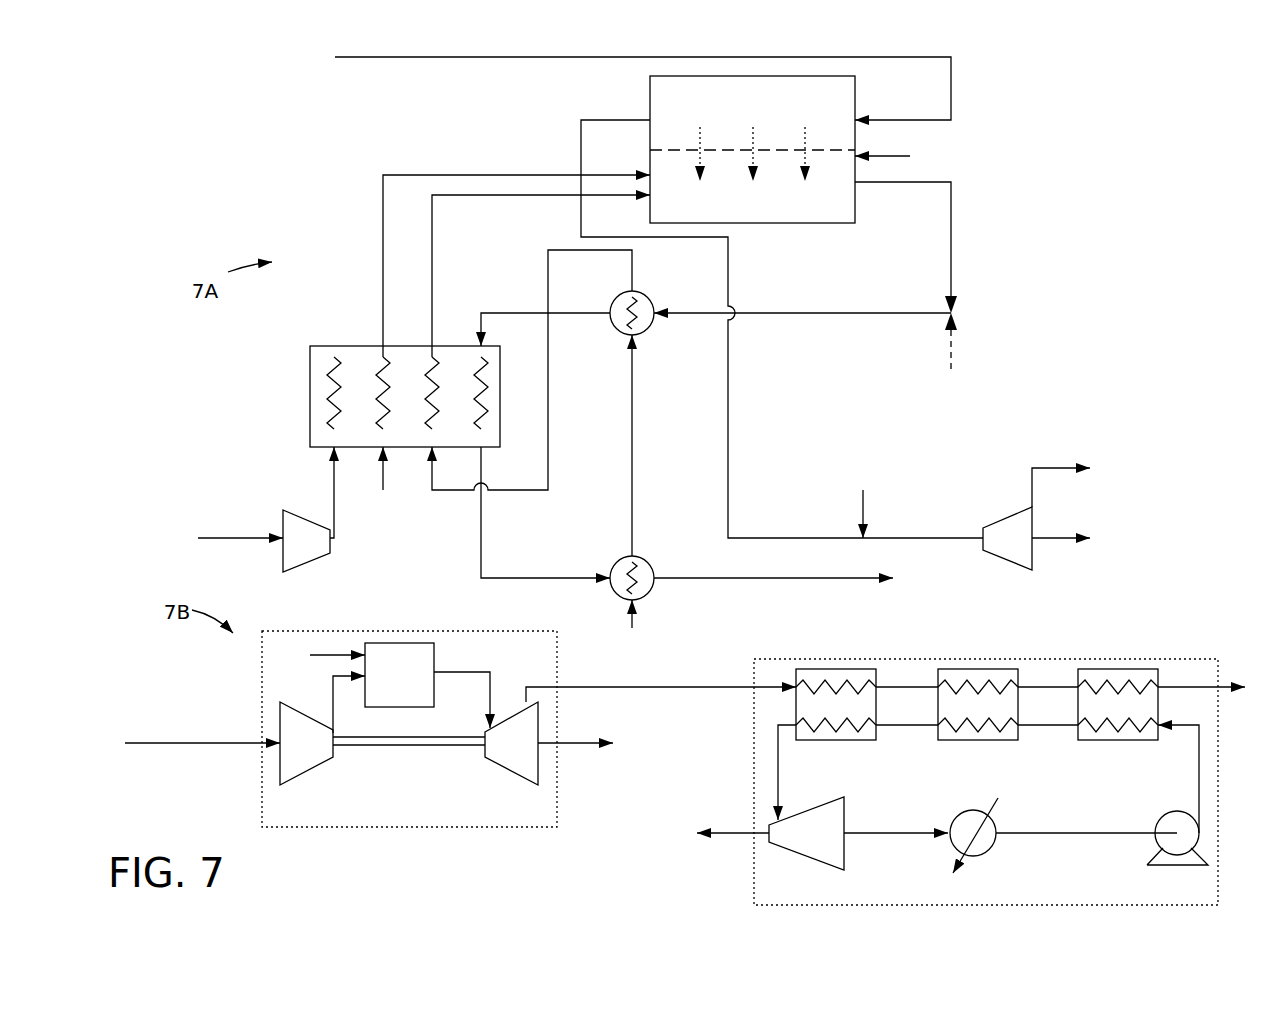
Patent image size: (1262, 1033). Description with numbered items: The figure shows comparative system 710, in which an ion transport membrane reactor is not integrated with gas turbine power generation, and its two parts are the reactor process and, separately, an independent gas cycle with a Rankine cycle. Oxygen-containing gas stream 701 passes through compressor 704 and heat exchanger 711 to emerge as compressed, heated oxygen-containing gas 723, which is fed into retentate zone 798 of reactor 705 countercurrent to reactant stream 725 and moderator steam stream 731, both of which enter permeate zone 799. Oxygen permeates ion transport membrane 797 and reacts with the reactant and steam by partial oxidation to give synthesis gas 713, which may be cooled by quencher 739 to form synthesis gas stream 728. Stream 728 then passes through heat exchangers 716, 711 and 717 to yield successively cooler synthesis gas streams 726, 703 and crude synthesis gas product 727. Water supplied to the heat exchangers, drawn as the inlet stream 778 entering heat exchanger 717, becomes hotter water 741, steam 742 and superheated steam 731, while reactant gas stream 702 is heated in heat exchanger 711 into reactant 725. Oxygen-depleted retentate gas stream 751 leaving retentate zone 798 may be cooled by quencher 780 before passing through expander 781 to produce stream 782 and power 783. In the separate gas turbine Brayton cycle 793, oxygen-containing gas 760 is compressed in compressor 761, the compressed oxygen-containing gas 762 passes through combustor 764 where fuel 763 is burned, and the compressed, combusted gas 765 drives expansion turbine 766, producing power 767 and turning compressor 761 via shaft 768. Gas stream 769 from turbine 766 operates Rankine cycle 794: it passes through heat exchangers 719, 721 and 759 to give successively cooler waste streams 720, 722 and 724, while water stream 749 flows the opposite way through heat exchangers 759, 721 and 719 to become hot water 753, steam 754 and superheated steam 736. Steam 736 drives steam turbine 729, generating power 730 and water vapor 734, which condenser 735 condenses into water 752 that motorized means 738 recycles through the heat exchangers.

In FIG. 7A, the oxygen-containing gas stream 701 is at (223, 538).
In FIG. 7A, the reactant gas stream 702 is at (384, 493).
In FIG. 7A, the synthesis gas stream 703 is at (482, 532).
In FIG. 7A, the compressor 704 is at (290, 552).
In FIG. 7A, the ion transport membrane reactor 705 is at (909, 156).
In FIG. 7A, the system 710 is at (1040, 262).
In FIG. 7A, the heat exchanger 711 is at (310, 380).
In FIG. 7A, the synthesis gas 713 is at (903, 184).
In FIG. 7A, the heat exchanger 716 is at (618, 331).
In FIG. 7A, the heat exchanger 717 is at (614, 564).
In FIG. 7, the heat exchanger 719 is at (822, 714).
In FIG. 7, the waste stream 720 is at (888, 674).
In FIG. 7, the heat exchanger 721 is at (963, 714).
In FIG. 7, the waste stream 722 is at (1030, 674).
In FIG. 7A, the compressed, heated oxygen-containing gas 723 is at (735, 57).
In FIG. 7, the waste stream 724 is at (1202, 674).
In FIG. 7A, the reactant stream 725 is at (428, 175).
In FIG. 7A, the synthesis gas stream 726 is at (588, 313).
In FIG. 7A, the crude synthesis gas product 727 is at (728, 578).
In FIG. 7A, the synthesis gas stream 728 is at (822, 313).
In FIG. 7, the steam turbine 729 is at (798, 842).
In FIG. 7, the power 730 is at (724, 832).
In FIG. 7A, the moderator stream 731 is at (450, 199).
In FIG. 7, the water vapor 734 is at (870, 833).
In FIG. 7, the condenser 735 is at (982, 854).
In FIG. 7, the superheated steam 736 is at (779, 774).
In FIG. 7, the motorized means 738 is at (1172, 865).
In FIG. 7A, the quencher 739 is at (958, 356).
In FIG. 7A, the hotter water 741 is at (636, 442).
In FIG. 7A, the steam 742 is at (550, 384).
In FIG. 7, the water stream 749 is at (1210, 740).
In FIG. 7A, the oxygen-depleted retentate gas stream 751 is at (581, 148).
In FIG. 7, the water 752 is at (1014, 835).
In FIG. 7, the hot water 753 is at (1022, 726).
In FIG. 7, the steam 754 is at (879, 726).
In FIG. 7, the heat exchanger 759 is at (1103, 714).
In FIG. 7B, the oxygen-containing gas 760 is at (196, 740).
In FIG. 7B, the compressor 761 is at (288, 754).
In FIG. 7B, the compressed oxygen-containing gas 762 is at (334, 702).
In FIG. 7B, the fuel 763 is at (318, 656).
In FIG. 7B, the combustor 764 is at (385, 683).
In FIG. 7B, the compressed, combusted oxygen-containing gas 765 is at (472, 672).
In FIG. 7B, the expansion turbine 766 is at (498, 754).
In FIG. 7B, the power 767 is at (574, 742).
In FIG. 7B, the shaft 768 is at (406, 746).
In FIG. 7, the gas stream 769 is at (588, 687).
In FIG. 7A, the coolant inlet 778 is at (652, 622).
In FIG. 7A, the quencher 780 is at (863, 508).
In FIG. 7A, the expander 781 is at (995, 549).
In FIG. 7A, the stream 782 is at (1036, 468).
In FIG. 7A, the power 783 is at (1038, 538).
In FIG. 7B, the Brayton cycle 793 is at (350, 827).
In FIG. 7, the Rankine cycle 794 is at (1058, 904).
In FIG. 7A, the ion transport membrane 797 is at (776, 144).
In FIG. 7A, the retentate zone 798 is at (681, 108).
In FIG. 7A, the permeate zone 799 is at (678, 219).